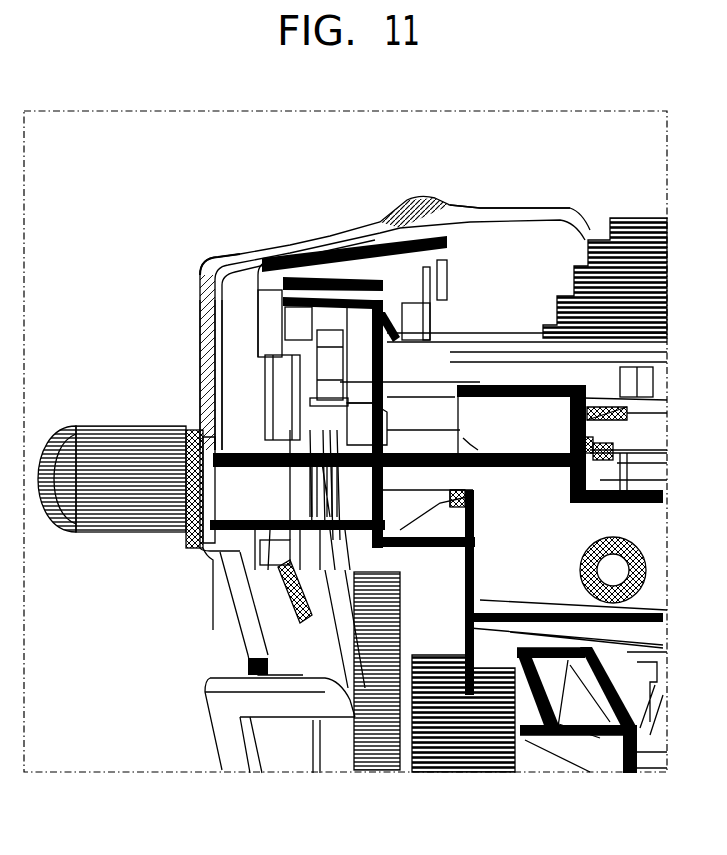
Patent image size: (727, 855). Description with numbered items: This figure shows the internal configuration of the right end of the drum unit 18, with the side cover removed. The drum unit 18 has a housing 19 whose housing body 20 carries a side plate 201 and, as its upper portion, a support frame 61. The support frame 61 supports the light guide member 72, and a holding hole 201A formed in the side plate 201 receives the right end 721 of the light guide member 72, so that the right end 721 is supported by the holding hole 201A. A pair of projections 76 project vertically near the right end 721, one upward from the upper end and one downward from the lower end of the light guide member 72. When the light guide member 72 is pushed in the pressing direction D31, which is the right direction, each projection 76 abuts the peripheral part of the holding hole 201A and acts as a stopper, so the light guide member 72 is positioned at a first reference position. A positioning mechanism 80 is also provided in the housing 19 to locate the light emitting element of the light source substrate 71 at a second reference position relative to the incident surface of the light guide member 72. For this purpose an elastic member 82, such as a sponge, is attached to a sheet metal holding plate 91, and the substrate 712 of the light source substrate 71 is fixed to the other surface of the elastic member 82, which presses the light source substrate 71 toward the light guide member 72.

The drum unit 18 is at (156, 214).
The housing 19 is at (484, 176).
The housing body 20 is at (542, 595).
The support frame 61 is at (550, 427).
The light source substrate 71 is at (255, 300).
The light guide member 72 is at (519, 325).
The projection 76 is at (427, 267).
The positioning mechanism 80 is at (225, 363).
The elastic member 82 is at (235, 347).
The holding plate 91 is at (250, 253).
The side plate 201 is at (358, 323).
The holding hole 201A is at (340, 382).
The substrate 712 is at (267, 323).
The right end 721 is at (333, 330).
The pressing direction D31 is at (640, 192).